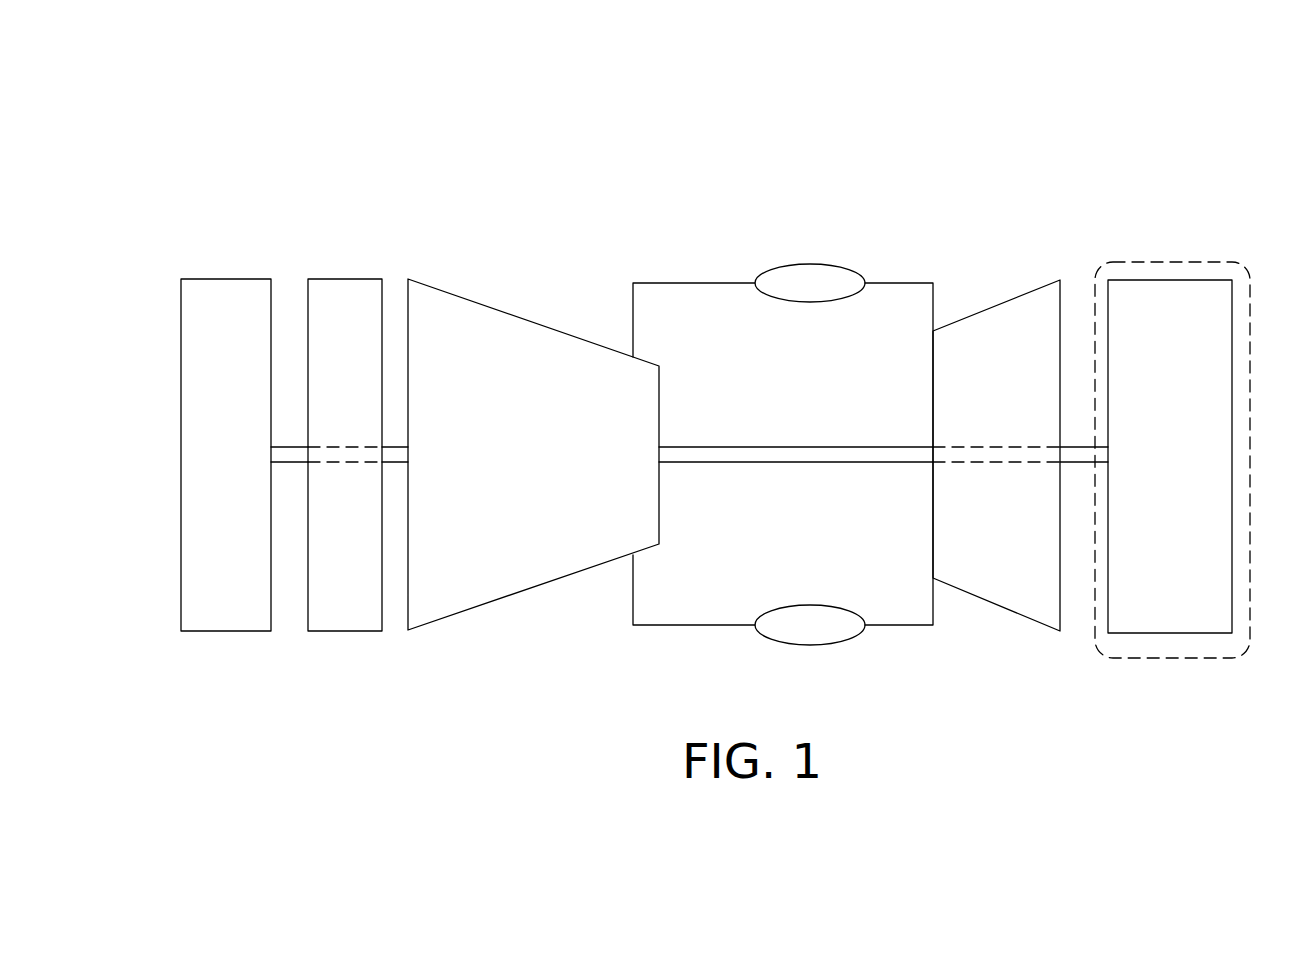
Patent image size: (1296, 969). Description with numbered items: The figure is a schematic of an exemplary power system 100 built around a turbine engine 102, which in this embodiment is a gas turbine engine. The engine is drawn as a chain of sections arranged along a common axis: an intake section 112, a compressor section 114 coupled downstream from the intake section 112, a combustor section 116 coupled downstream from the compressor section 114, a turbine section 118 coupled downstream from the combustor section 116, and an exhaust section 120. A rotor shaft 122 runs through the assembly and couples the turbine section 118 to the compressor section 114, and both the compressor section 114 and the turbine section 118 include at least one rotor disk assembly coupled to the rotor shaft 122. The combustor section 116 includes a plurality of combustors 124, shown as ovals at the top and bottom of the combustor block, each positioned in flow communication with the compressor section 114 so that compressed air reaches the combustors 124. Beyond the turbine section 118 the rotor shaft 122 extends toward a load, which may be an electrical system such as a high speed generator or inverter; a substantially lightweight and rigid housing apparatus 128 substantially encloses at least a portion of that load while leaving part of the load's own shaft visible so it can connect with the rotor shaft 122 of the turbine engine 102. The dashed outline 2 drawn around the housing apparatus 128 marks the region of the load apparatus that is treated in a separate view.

The power system 100 is at (298, 135).
The turbine engine 102 is at (895, 108).
The intake section 112 is at (345, 279).
The compressor section 114 is at (425, 282).
The combustor section 116 is at (927, 248).
The turbine section 118 is at (1025, 295).
The exhaust section 120 is at (181, 305).
The rotor shaft 122 is at (790, 447).
The combustor 124 is at (822, 263).
The housing apparatus 128 is at (1175, 280).
The dashed enclosure 2 is at (1240, 262).